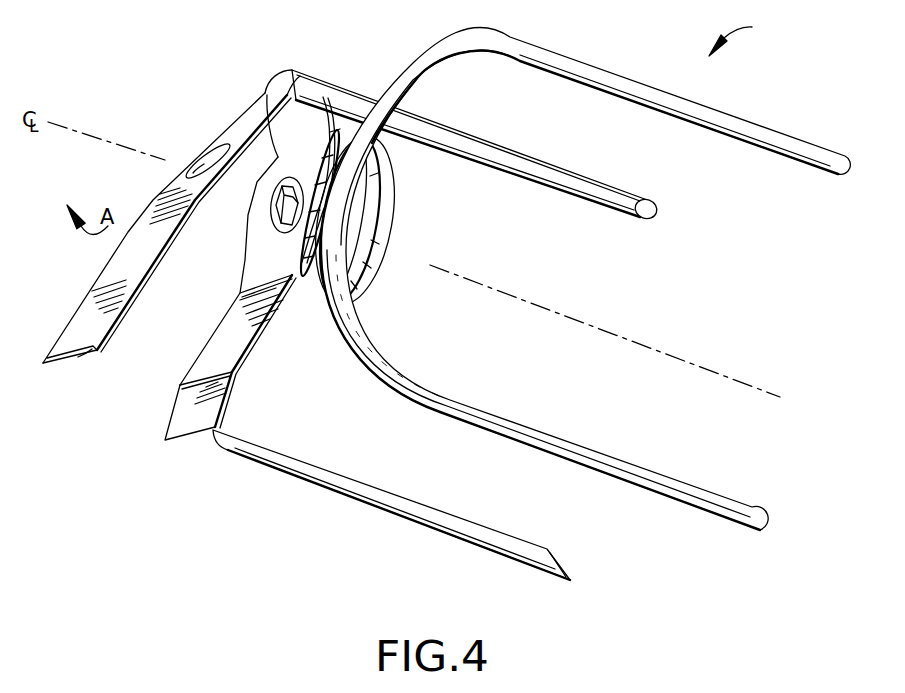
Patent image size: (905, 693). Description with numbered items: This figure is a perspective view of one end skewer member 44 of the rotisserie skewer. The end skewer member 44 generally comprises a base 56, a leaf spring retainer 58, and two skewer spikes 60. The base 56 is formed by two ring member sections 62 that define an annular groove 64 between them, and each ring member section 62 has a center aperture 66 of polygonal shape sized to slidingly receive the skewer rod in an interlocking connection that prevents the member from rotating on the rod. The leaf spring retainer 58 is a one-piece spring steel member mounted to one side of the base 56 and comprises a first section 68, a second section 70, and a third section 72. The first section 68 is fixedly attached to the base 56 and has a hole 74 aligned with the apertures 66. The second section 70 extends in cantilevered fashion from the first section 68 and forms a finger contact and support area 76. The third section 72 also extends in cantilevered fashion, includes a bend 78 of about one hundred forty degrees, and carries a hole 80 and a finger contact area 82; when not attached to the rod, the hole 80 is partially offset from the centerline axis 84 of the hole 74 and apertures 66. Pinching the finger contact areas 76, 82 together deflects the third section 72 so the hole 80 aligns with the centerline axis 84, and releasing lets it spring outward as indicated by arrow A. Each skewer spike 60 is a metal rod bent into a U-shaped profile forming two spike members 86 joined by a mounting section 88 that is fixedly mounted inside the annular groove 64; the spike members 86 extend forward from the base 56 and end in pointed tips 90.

The end skewer member 44 is at (585, 270).
The base 56 is at (370, 254).
The leaf spring retainer 58 is at (148, 253).
The skewer spikes 60 is at (417, 522).
The ring member sections 62 is at (372, 167).
The annular groove 64 is at (365, 209).
The center aperture 66 is at (280, 213).
The first section 68 is at (280, 153).
The second section 70 is at (207, 384).
The third section 72 is at (67, 337).
The hole 74 is at (335, 120).
The finger contact and support area 76 is at (193, 437).
The bend 78 is at (299, 72).
The hole 80 is at (205, 150).
The finger contact area 82 is at (82, 356).
The centerline axis 84 is at (690, 337).
The spike members 86 is at (581, 310).
The mounting section 88 is at (347, 295).
The pointed tips 90 is at (847, 164).